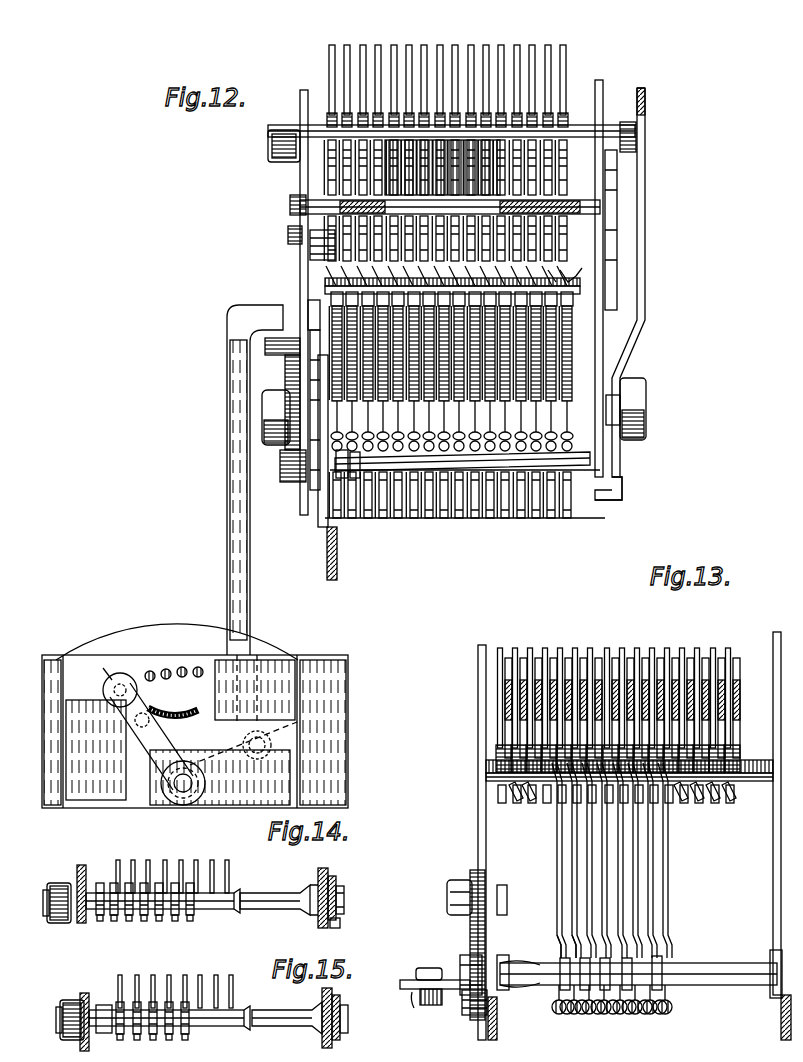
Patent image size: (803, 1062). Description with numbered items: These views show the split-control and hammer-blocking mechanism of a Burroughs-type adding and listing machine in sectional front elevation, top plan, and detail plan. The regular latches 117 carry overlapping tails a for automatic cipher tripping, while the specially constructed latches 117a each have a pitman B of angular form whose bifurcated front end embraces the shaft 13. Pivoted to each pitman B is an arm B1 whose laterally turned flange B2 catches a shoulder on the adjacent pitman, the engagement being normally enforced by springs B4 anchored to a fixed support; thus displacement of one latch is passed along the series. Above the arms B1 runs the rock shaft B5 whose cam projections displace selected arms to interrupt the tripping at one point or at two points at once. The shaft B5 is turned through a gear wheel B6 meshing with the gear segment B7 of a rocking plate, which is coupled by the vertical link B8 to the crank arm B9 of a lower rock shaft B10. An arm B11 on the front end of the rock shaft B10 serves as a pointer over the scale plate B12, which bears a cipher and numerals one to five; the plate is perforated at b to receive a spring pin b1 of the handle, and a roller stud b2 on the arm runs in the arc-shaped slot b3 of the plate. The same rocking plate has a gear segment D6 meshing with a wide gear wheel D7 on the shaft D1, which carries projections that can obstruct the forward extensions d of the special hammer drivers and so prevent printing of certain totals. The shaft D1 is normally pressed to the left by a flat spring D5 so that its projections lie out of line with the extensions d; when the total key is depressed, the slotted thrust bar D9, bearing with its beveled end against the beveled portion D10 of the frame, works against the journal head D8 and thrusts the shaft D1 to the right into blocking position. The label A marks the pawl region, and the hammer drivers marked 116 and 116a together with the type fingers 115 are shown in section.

In FIG. 12, the shaft 13 is at (300, 182).
In FIG. 12, the type fingers 115 is at (455, 45).
In FIG. 13, the type fingers 115 is at (519, 648).
In FIG. 12, the springs B4 is at (510, 135).
In FIG. 13, the springs B4 is at (612, 1015).
In FIG. 12, the gear wheel B6 is at (298, 205).
In FIG. 12, the rock shaft B5 is at (580, 200).
In FIG. 13, the rock shaft B5 is at (735, 963).
In FIG. 12, the gear segment B7 is at (298, 230).
In FIG. 13, the gear segment B7 is at (470, 958).
In FIG. 12, the flange or lip B2 is at (330, 245).
In FIG. 12, the latches 117 is at (345, 280).
In FIG. 13, the latches 117 is at (735, 650).
In FIG. 12, the pawl A is at (569, 277).
In FIG. 12, the stop fingers 116a is at (440, 518).
In FIG. 14, the stop fingers 116a is at (165, 862).
In FIG. 15, the stop fingers 116a is at (185, 990).
In FIG. 12, the stop fingers 116 is at (572, 518).
In FIG. 12, the shaft D1 is at (590, 470).
In FIG. 14, the shaft D1 is at (272, 909).
In FIG. 15, the shaft D1 is at (278, 1026).
In FIG. 12, the flat spring D5 is at (622, 397).
In FIG. 14, the flat spring D5 is at (322, 876).
In FIG. 12, the beveled portion D10 is at (622, 488).
In FIG. 14, the beveled portion D10 is at (330, 914).
In FIG. 12, the vertical link B8 is at (232, 486).
In FIG. 13, the vertical link B8 is at (456, 990).
In FIG. 12, the scale plate B12 is at (170, 628).
In FIG. 12, the perforations b is at (203, 672).
In FIG. 12, the spring pin b1 is at (118, 692).
In FIG. 12, the slot b3 is at (198, 708).
In FIG. 12, the roller stud b2 is at (138, 722).
In FIG. 12, the arm B11 is at (140, 742).
In FIG. 12, the rock shaft B10 is at (185, 786).
In FIG. 12, the crank arm B9 is at (216, 745).
In FIG. 13, the crank arm B9 is at (410, 990).
In FIG. 13, the pitman B is at (658, 836).
In FIG. 13, the latches 117a is at (640, 652).
In FIG. 13, the overlapping tails a is at (532, 805).
In FIG. 13, the arm B1 is at (630, 918).
In FIG. 13, the gear segment D6 is at (478, 872).
In FIG. 14, the gear wheel D7 is at (60, 883).
In FIG. 15, the gear wheel D7 is at (72, 1000).
In FIG. 14, the forward extension d is at (231, 866).
In FIG. 14, the thrust bar D9 is at (336, 882).
In FIG. 14, the journal head D8 is at (344, 900).